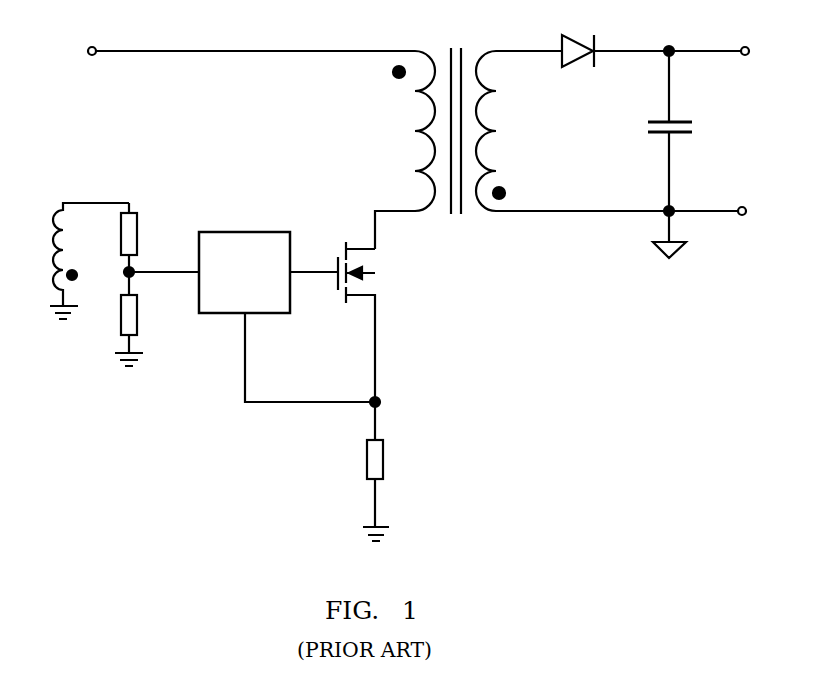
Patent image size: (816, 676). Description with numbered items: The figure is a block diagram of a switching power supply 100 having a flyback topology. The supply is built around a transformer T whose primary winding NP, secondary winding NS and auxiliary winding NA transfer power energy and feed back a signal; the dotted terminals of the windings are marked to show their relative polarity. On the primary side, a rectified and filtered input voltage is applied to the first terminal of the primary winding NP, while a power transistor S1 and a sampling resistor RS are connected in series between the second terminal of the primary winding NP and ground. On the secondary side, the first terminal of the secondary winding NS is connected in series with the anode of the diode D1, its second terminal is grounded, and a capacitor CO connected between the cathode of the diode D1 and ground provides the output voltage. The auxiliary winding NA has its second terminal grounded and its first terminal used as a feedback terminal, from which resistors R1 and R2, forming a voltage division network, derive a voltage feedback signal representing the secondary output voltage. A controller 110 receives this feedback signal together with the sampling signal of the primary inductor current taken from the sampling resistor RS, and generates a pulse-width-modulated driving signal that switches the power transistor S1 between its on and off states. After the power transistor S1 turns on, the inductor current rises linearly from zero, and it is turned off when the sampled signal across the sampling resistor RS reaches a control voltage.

The switching power supply 100 is at (391, 274).
The controller 110 is at (263, 283).
The transformer T is at (458, 135).
The primary winding NP is at (405, 150).
The secondary winding NS is at (509, 131).
The auxiliary winding NA is at (73, 261).
The diode D1 is at (578, 37).
The capacitor CO is at (655, 131).
The power transistor S1 is at (381, 322).
The sampling resistor RS is at (393, 471).
The resistor R1 is at (116, 237).
The resistor R2 is at (119, 319).